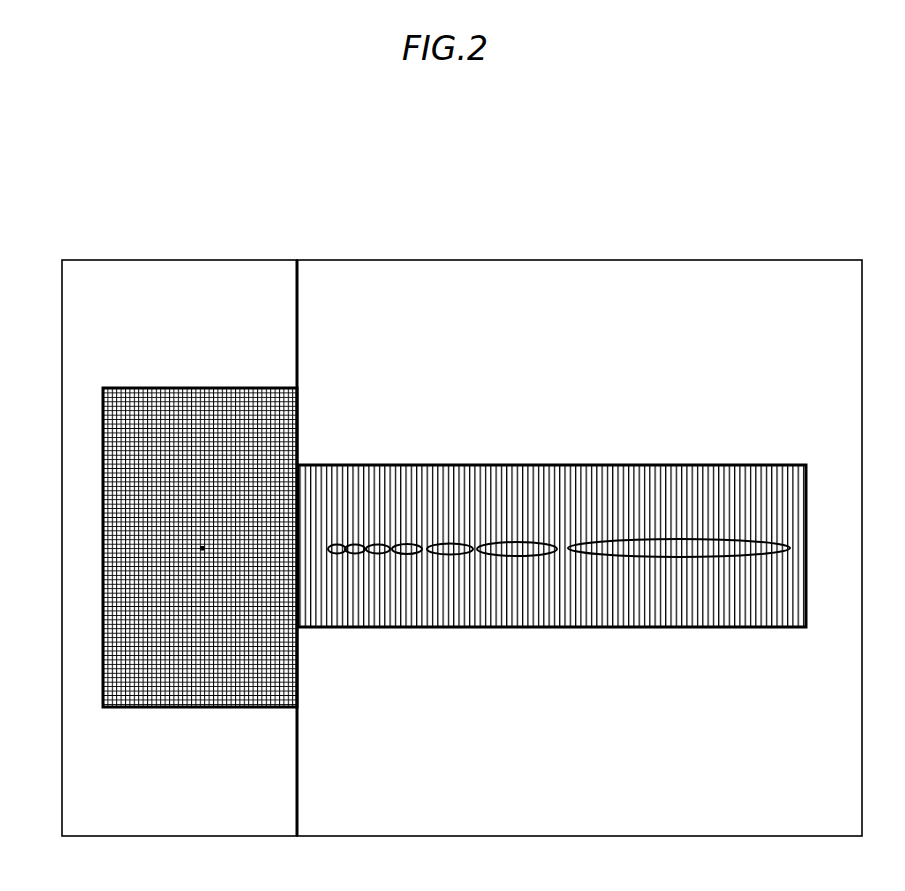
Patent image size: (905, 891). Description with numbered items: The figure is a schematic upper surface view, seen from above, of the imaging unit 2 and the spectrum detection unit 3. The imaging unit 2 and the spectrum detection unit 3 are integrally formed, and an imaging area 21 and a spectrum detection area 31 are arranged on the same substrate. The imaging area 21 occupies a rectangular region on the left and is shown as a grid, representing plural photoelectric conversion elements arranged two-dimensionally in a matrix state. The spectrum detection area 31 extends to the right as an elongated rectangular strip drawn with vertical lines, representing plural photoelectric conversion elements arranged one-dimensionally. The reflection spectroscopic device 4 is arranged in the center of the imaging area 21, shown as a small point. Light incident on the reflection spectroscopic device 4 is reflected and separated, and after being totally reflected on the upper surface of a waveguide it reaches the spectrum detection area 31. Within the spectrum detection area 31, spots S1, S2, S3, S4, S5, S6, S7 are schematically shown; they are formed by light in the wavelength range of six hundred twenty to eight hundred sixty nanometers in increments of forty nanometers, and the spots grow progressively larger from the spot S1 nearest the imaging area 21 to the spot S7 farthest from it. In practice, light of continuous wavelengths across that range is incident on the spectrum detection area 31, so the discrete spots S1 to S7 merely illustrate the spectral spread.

The imaging unit 2 is at (150, 259).
The spectrum detection unit 3 is at (620, 259).
The imaging area 21 is at (214, 386).
The spectrum detection area 31 is at (482, 463).
The reflection spectroscopic device 4 is at (200, 548).
The spot S1 is at (341, 554).
The spot S2 is at (353, 554).
The spot S3 is at (372, 554).
The spot S4 is at (402, 554).
The spot S5 is at (440, 554).
The spot S6 is at (508, 555).
The spot S7 is at (637, 557).